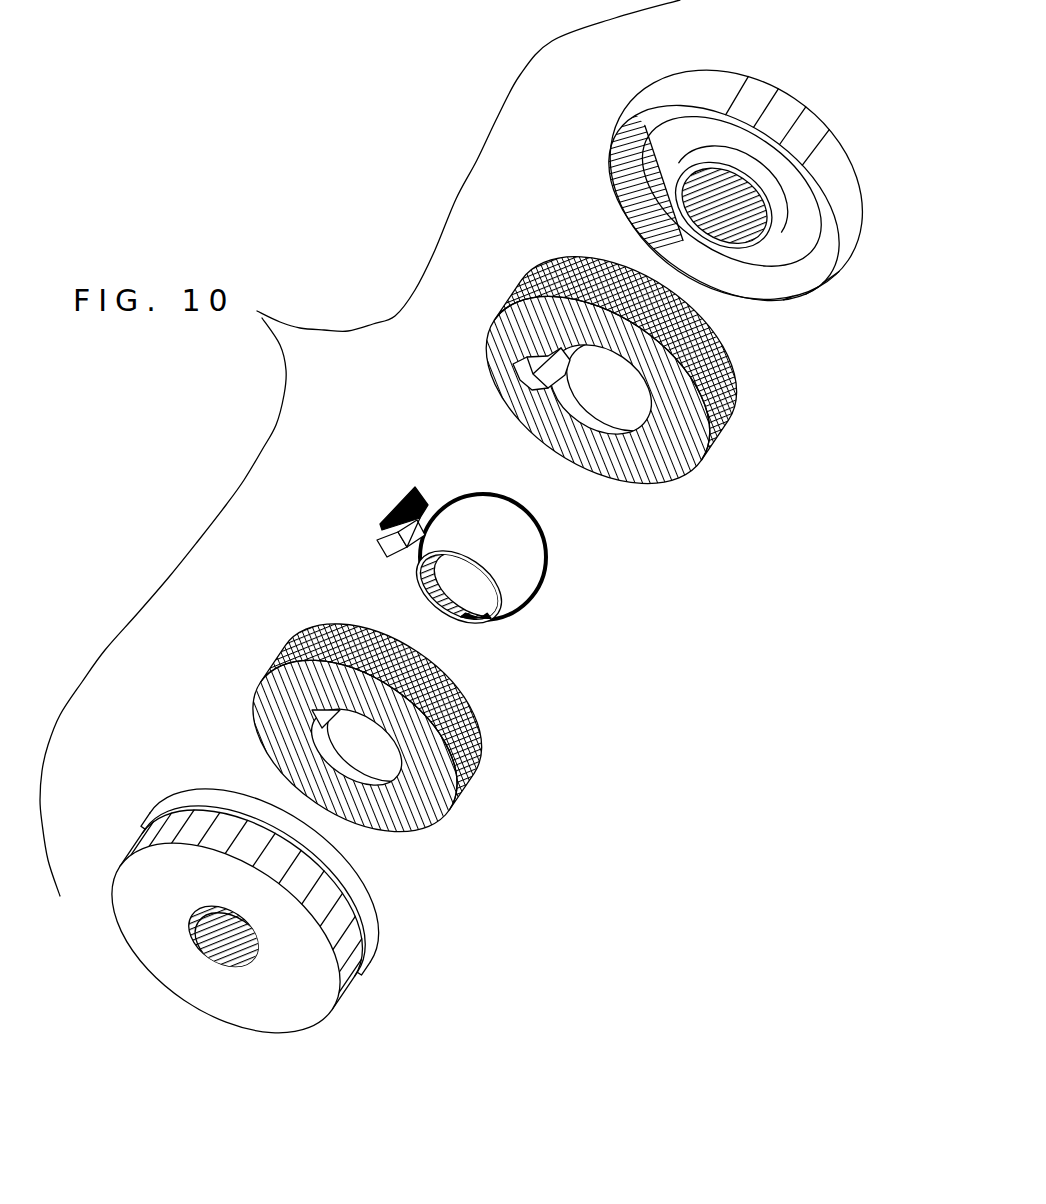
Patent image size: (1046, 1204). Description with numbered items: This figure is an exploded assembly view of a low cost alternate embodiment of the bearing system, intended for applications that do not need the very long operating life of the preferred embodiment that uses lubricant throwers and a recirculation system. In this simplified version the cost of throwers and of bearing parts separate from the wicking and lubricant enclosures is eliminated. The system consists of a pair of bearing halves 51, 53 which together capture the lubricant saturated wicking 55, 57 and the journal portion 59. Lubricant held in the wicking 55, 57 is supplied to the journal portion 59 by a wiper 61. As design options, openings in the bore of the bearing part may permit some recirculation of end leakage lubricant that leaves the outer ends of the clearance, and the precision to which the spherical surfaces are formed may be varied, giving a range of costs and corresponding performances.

The bearing half 51 is at (328, 1013).
The bearing half 53 is at (808, 300).
The lubricant saturated wicking 55 is at (447, 818).
The lubricant saturated wicking 57 is at (687, 477).
The journal portion 59 is at (527, 603).
The wiper 61 is at (398, 500).